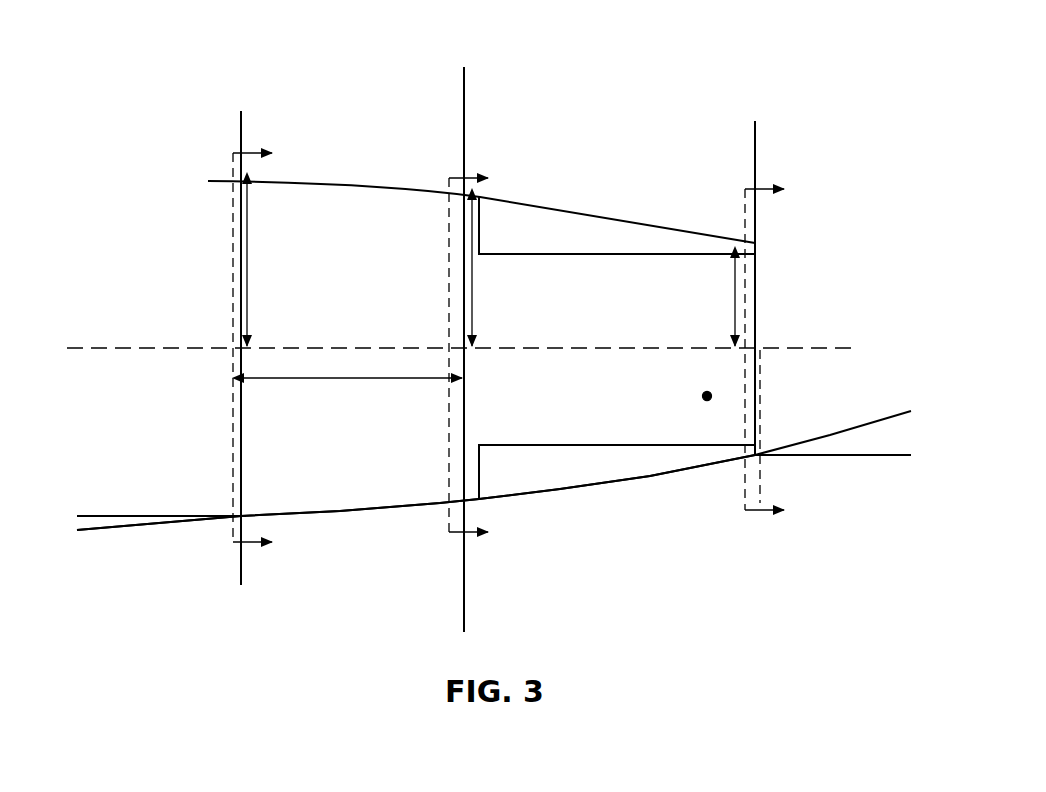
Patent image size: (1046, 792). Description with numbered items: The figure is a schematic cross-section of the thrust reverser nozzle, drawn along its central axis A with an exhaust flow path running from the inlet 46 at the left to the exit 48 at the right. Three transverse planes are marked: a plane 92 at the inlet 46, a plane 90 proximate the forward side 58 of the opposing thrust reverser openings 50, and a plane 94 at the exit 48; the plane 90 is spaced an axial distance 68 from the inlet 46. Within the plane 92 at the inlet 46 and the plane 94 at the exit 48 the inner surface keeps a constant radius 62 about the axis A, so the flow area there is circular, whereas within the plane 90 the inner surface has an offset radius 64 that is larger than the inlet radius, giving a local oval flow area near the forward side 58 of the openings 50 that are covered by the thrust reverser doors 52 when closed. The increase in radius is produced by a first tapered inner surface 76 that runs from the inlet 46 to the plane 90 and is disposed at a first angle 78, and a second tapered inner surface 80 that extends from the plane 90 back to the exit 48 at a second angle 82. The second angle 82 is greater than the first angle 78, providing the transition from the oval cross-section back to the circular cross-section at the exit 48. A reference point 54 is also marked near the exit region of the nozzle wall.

The inlet 46 is at (238, 257).
The exit 48 is at (760, 275).
The thrust reverser openings 50 is at (628, 248).
The thrust reverser doors 52 is at (601, 258).
The reference point 54 is at (707, 396).
The forward side 58 is at (485, 238).
The constant radius 62 is at (249, 285).
The offset radius 64 is at (474, 303).
The axial distance 68 is at (347, 385).
The first tapered inner surface 76 is at (360, 504).
The first angle 78 is at (95, 566).
The second tapered inner surface 80 is at (621, 475).
The second angle 82 is at (895, 508).
The plane 90 is at (466, 92).
The plane 92 is at (243, 128).
The plane 94 is at (757, 140).
The central axis A is at (92, 348).